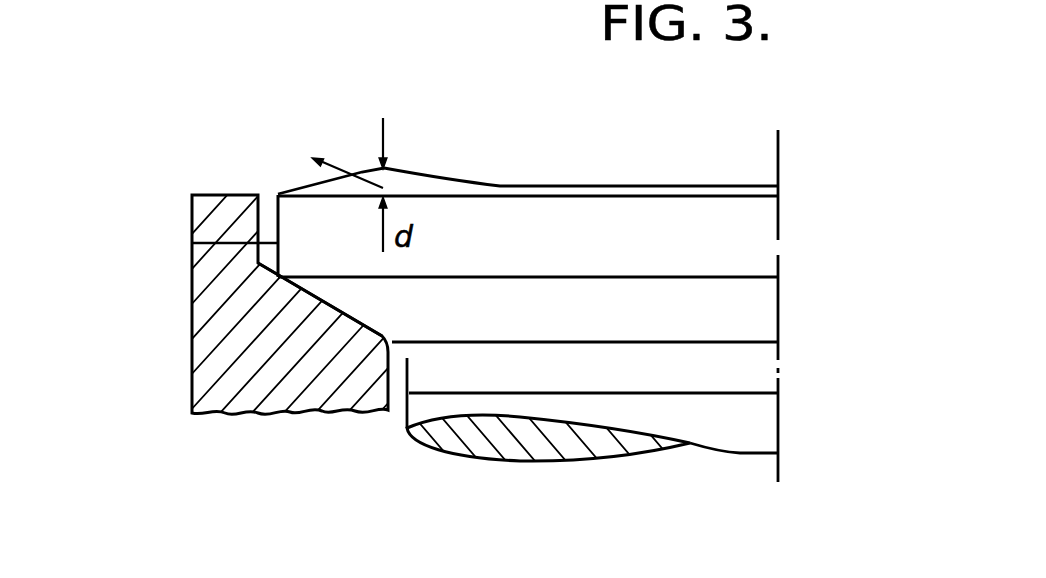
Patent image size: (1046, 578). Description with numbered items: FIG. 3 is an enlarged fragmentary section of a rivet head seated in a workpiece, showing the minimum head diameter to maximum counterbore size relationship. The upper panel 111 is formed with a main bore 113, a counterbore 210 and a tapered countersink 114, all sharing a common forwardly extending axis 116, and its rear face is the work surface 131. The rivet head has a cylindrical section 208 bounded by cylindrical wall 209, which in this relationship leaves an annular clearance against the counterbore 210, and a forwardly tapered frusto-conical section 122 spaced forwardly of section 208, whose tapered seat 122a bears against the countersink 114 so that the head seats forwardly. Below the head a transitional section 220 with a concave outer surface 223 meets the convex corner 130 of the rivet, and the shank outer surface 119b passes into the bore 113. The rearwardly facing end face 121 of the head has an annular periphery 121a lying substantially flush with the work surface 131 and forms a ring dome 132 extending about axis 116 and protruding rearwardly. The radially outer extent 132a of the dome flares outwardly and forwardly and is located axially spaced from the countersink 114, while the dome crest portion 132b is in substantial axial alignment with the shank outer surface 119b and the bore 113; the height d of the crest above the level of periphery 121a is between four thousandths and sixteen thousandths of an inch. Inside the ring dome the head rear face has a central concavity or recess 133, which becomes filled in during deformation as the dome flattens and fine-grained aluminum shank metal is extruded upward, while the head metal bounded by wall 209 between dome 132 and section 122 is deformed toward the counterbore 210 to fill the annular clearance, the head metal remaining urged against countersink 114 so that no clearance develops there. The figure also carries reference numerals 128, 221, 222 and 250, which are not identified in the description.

The panel 111 is at (205, 341).
The main bore 113 is at (385, 407).
The tapered countersink 114 is at (333, 305).
The axis 116 is at (778, 288).
The shank outer surface 119b is at (403, 416).
The end face 121 is at (464, 193).
The annular periphery 121a is at (280, 192).
The frusto-conical section 122 is at (585, 321).
The tapered seat 122a is at (292, 295).
The sealing material 128 is at (407, 358).
The convex corner 130 is at (393, 342).
The work surface 131 is at (227, 195).
The ring dome 132 is at (506, 180).
The dome radially outer extent 132a is at (305, 187).
The dome crest portion 132b is at (394, 168).
The central concavity or recess 133 is at (714, 186).
The cylindrical section 208 is at (528, 222).
The cylindrical wall 209 is at (192, 244).
The counterbore 210 is at (258, 217).
The transitional section 220 is at (637, 368).
The intermediate layer 221 is at (722, 342).
The innermost layer 222 is at (728, 393).
The concave outer surface 223 is at (384, 389).
The peak portion 250 is at (362, 172).